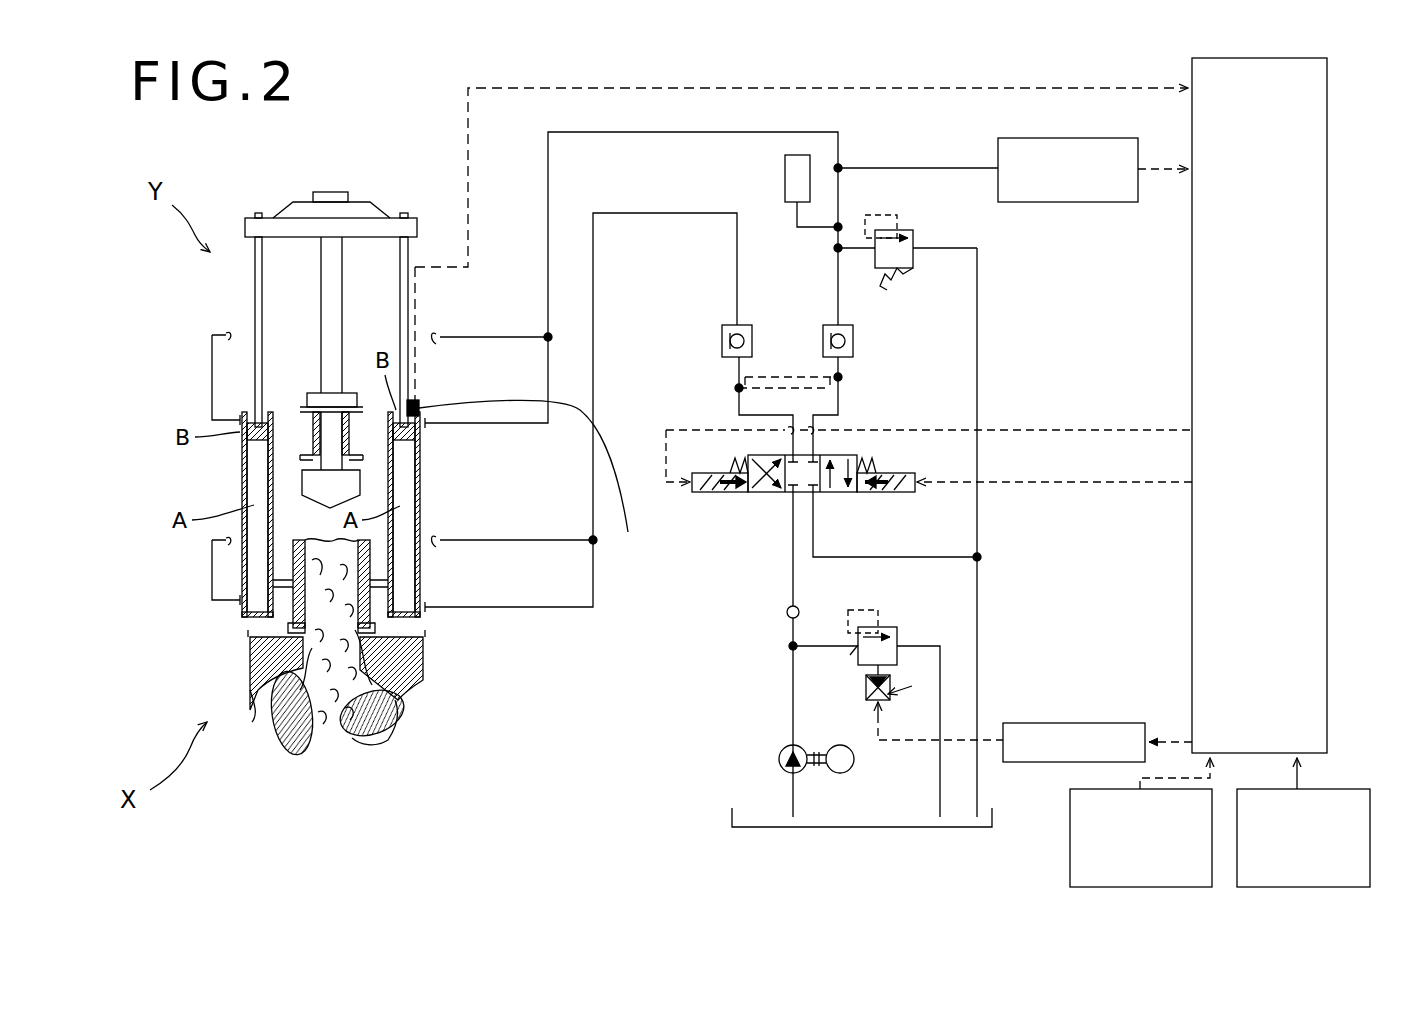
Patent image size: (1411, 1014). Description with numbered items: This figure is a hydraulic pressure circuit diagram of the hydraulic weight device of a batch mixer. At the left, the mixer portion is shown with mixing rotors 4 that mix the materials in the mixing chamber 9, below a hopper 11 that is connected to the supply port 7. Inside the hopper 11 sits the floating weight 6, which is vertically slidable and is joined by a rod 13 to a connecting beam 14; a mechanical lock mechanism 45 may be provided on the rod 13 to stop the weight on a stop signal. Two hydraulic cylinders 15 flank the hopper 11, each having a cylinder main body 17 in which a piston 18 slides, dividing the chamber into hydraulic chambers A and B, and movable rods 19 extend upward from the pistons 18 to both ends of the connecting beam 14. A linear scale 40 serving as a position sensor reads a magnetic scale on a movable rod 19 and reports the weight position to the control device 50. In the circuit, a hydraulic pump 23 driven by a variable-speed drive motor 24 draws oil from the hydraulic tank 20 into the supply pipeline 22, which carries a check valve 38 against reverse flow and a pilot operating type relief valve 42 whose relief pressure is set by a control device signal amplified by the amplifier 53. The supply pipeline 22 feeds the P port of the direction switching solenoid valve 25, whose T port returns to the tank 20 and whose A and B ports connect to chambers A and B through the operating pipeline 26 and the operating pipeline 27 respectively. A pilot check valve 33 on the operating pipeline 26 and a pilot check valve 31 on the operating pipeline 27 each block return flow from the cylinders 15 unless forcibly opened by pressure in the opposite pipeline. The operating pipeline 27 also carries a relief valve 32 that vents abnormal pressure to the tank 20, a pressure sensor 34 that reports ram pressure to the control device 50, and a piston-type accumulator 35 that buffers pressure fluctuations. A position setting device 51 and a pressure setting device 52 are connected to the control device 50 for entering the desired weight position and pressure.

The mixing rotors 4 is at (293, 755).
The floating weight 6 is at (313, 480).
The supply port 7 is at (327, 612).
The mixing chamber 9 is at (252, 685).
The hopper 11 is at (292, 572).
The rod 13 is at (320, 310).
The connecting beam 14 is at (296, 212).
The hydraulic cylinders 15 is at (238, 460).
The cylinder main body 17 is at (240, 487).
The piston 18 is at (262, 425).
The movable rods 19 is at (254, 285).
The hydraulic tank 20 is at (732, 812).
The supply pipeline 22 is at (792, 690).
The hydraulic pump 23 is at (778, 759).
The drive motor 24 is at (853, 773).
The direction switching solenoid valve 25 is at (862, 500).
The operating pipeline 26 is at (638, 215).
The operating pipeline 27 is at (645, 134).
The pilot check valve 31 is at (860, 341).
The relief valve 32 is at (917, 242).
The pilot check valve 33 is at (715, 340).
The pressure sensor 34 is at (1075, 203).
The piston-type accumulator 35 is at (782, 176).
The check valve 38 is at (800, 608).
The linear scale 40 is at (797, 343).
The pilot operating type relief valve 42 is at (898, 628).
The mechanical lock mechanism 45 is at (348, 390).
The control device 50 is at (1328, 548).
The position setting device 51 is at (1355, 789).
The pressure setting device 52 is at (1069, 857).
The amplifier 53 is at (1012, 722).